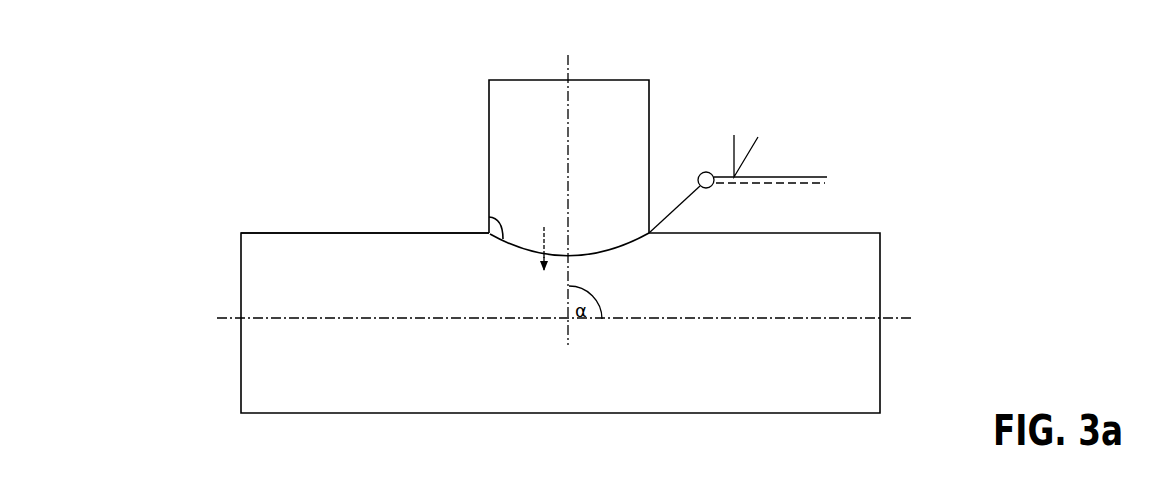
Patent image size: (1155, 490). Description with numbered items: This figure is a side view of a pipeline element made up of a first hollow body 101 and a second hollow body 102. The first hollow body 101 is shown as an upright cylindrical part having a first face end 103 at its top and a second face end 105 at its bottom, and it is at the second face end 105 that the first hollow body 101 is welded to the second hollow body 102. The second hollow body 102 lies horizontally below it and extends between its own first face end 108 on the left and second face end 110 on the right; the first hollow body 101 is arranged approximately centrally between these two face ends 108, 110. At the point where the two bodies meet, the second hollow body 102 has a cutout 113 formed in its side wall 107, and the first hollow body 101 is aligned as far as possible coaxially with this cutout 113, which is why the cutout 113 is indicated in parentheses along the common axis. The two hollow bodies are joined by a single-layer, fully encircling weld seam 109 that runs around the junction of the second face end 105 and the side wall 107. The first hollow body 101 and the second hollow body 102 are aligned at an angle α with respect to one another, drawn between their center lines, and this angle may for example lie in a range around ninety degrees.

The first hollow body 101 is at (488, 122).
The second hollow body 102 is at (240, 263).
The first face end 103 is at (541, 77).
The second face end 105 is at (587, 234).
The side wall 107 is at (303, 231).
The first face end 108 is at (178, 353).
The weld seam 109 is at (489, 217).
The second face end 110 is at (887, 355).
The cutout 113 is at (543, 238).